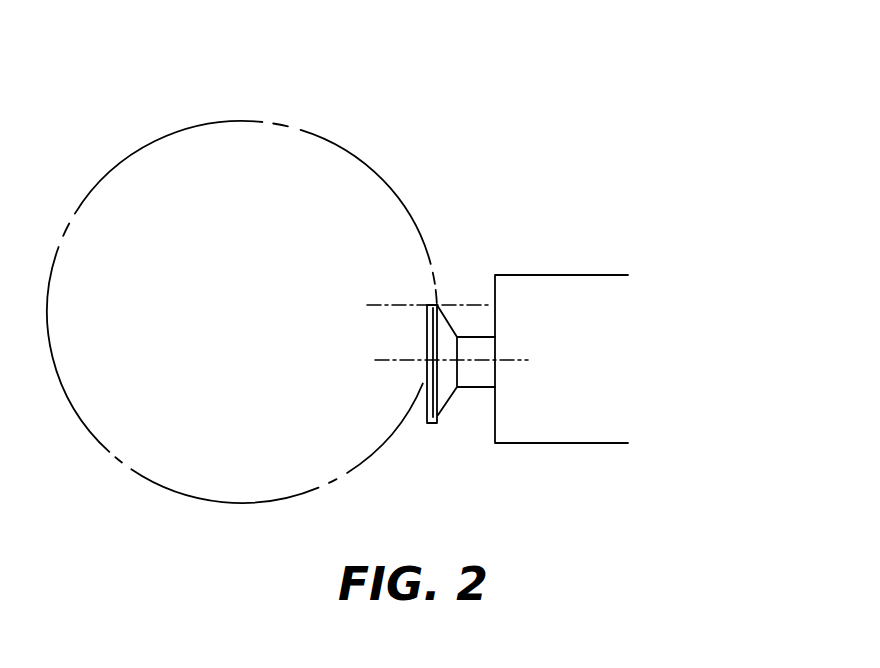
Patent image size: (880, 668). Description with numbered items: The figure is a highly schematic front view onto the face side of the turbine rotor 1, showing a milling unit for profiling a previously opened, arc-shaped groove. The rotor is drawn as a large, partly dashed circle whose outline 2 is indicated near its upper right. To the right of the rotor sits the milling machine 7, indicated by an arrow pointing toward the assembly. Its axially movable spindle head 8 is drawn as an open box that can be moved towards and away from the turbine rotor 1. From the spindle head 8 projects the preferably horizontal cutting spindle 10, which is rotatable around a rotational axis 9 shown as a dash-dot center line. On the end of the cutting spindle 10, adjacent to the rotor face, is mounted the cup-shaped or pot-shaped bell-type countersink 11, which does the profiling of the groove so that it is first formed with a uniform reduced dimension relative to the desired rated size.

The turbine rotor 1 is at (242, 298).
The drum outer surface 2 is at (373, 168).
The milling machine 7 is at (517, 153).
The spindle head 8 is at (567, 334).
The rotational axis 9 is at (517, 361).
The cutting spindle 10 is at (481, 377).
The bell-type countersink 11 is at (452, 397).